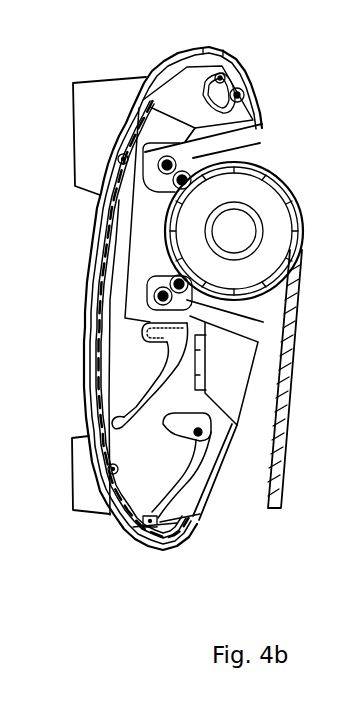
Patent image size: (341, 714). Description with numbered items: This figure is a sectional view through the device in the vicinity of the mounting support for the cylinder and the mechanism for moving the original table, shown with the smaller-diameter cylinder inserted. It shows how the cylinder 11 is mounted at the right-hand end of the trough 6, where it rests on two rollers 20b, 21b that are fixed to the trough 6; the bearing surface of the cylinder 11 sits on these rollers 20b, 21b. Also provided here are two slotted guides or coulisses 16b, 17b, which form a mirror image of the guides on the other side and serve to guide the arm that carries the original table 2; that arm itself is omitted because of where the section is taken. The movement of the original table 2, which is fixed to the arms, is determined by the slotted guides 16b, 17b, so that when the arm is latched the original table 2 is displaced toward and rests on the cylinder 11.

The original table 2 is at (267, 488).
The trough 6 is at (193, 120).
The cylinder 11 is at (280, 186).
The slotted guide 16b is at (128, 517).
The slotted guide 17b is at (137, 409).
The roller 20b is at (168, 182).
The roller 21b is at (158, 288).